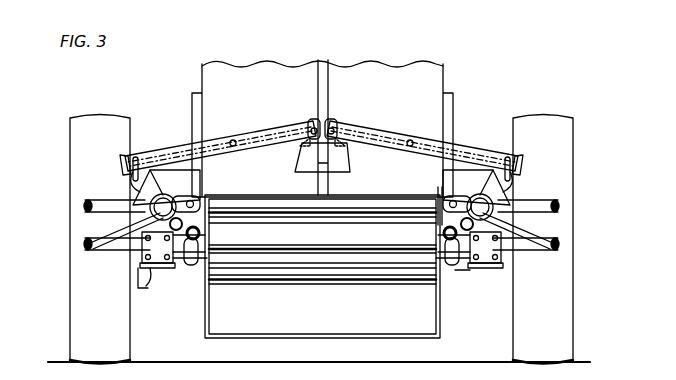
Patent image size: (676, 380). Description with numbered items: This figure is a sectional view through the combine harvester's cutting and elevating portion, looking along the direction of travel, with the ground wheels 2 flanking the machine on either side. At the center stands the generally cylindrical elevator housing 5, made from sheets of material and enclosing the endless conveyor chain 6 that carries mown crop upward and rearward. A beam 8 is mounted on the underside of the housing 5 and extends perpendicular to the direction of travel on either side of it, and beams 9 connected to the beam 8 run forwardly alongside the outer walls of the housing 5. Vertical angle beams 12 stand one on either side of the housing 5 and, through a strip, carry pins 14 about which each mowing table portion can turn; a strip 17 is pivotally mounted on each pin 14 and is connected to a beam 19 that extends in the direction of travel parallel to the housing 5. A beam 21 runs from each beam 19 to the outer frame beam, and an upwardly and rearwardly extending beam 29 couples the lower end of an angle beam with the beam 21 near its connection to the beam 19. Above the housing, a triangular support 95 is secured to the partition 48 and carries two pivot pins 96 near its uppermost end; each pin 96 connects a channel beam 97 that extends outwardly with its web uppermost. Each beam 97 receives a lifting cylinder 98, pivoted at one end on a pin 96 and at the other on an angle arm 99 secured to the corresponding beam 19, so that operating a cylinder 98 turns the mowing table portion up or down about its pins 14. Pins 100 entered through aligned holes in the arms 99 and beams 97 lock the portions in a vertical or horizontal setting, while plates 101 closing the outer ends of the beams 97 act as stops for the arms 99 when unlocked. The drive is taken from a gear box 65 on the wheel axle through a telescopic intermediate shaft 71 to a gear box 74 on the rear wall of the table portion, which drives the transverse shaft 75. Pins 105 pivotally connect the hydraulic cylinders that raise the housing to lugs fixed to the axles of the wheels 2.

The ground wheels 2 is at (72, 343).
The elevator housing 5 is at (207, 327).
The endless conveyor chain 6 is at (288, 282).
The beam 8 is at (463, 270).
The beams 9 is at (200, 259).
The angle beams 12 is at (450, 128).
The pins 14 is at (198, 190).
The strip 17 is at (440, 196).
The beam 19 is at (168, 196).
The beam 21 is at (85, 206).
The beam 29 is at (86, 241).
The partition 48 is at (318, 91).
The gear box 65 is at (183, 226).
The telescopic intermediate shaft 71 is at (189, 265).
The gear box 74 is at (160, 268).
The shaft 75 is at (103, 252).
The triangular support 95 is at (350, 165).
The pivot pins 96 is at (329, 119).
The channel beam 97 is at (266, 132).
The lifting cylinder 98 is at (363, 138).
The angle arm 99 is at (133, 190).
The pins 100 is at (124, 173).
The plates 101 is at (126, 157).
The pins 105 is at (144, 287).